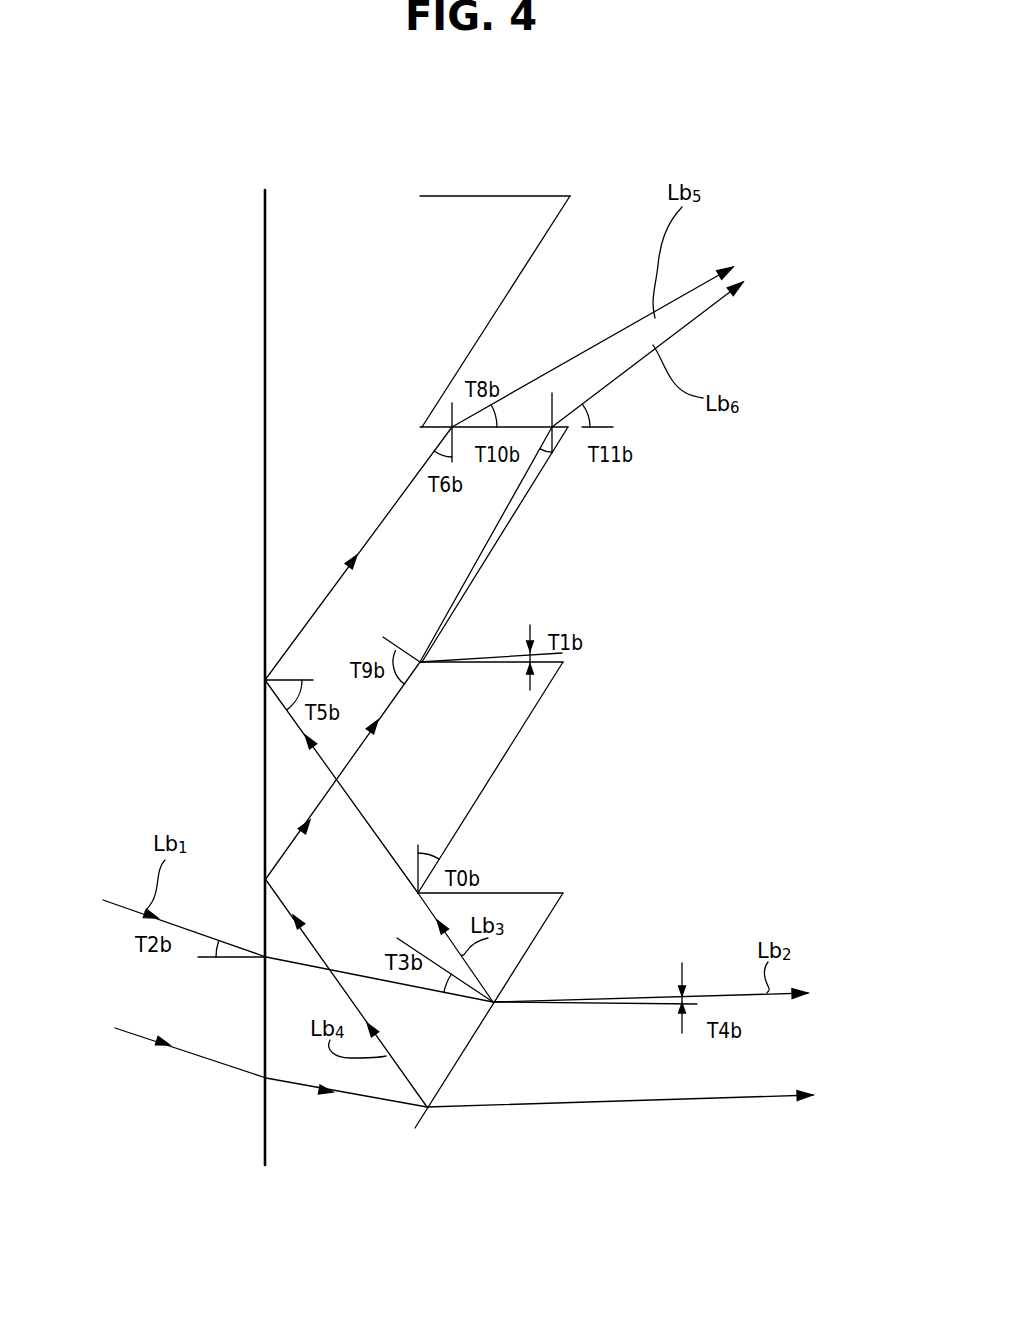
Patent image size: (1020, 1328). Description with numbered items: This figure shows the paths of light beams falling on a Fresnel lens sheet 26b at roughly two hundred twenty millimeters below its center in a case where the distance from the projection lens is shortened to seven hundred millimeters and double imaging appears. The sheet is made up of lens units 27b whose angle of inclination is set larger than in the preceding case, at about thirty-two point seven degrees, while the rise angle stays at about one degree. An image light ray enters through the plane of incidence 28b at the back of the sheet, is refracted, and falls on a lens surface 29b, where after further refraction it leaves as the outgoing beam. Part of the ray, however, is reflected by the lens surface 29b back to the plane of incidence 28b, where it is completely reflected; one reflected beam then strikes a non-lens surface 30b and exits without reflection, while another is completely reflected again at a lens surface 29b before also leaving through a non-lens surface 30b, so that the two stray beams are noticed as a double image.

The Fresnel lens sheet 26b is at (178, 332).
The lens unit 27b is at (539, 619).
The plane of incidence 28b is at (262, 447).
The lens surface 29b is at (560, 210).
The non-lens surface 30b is at (518, 195).